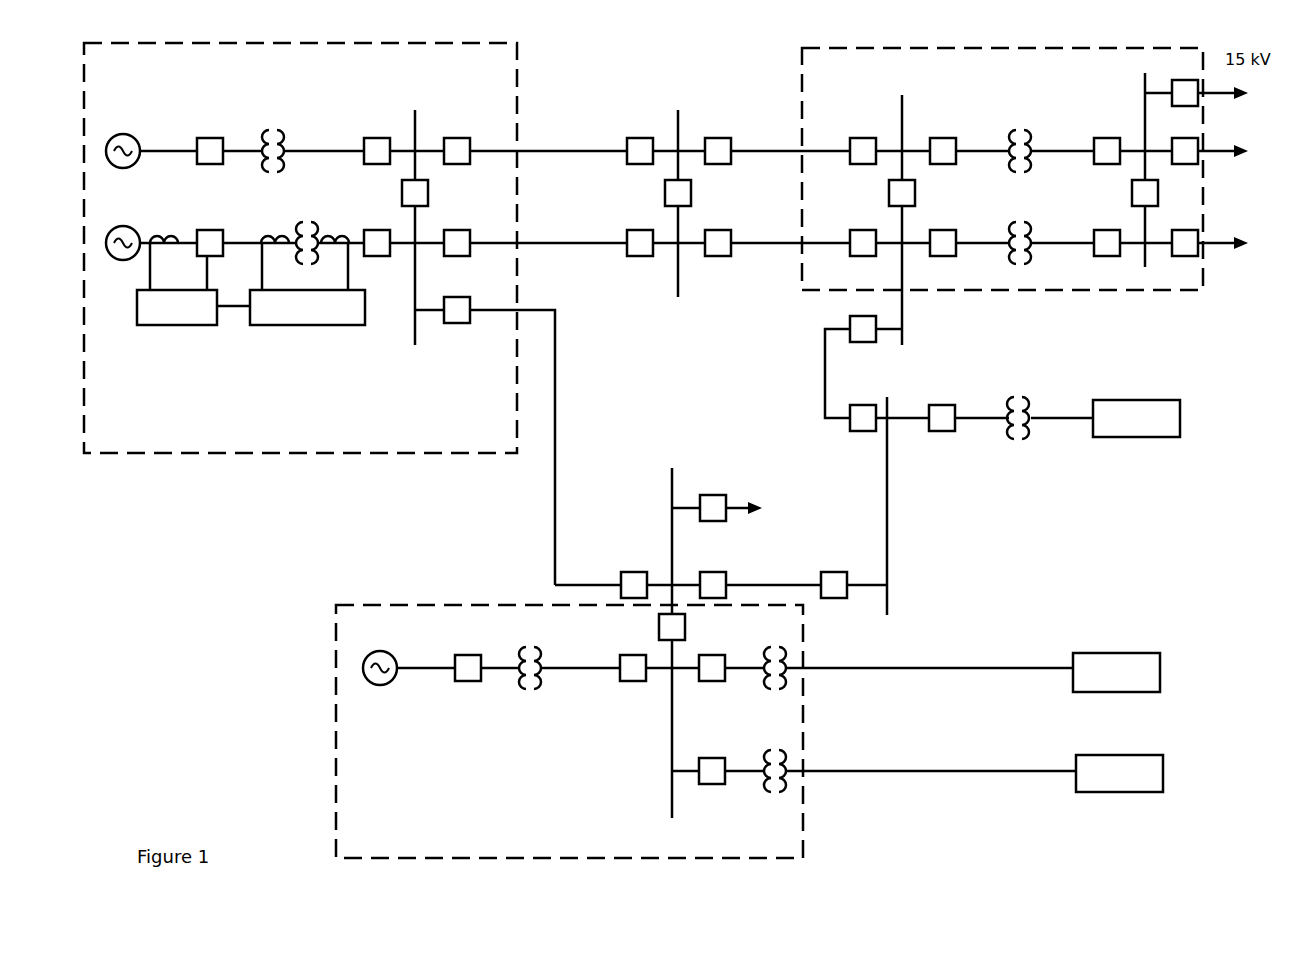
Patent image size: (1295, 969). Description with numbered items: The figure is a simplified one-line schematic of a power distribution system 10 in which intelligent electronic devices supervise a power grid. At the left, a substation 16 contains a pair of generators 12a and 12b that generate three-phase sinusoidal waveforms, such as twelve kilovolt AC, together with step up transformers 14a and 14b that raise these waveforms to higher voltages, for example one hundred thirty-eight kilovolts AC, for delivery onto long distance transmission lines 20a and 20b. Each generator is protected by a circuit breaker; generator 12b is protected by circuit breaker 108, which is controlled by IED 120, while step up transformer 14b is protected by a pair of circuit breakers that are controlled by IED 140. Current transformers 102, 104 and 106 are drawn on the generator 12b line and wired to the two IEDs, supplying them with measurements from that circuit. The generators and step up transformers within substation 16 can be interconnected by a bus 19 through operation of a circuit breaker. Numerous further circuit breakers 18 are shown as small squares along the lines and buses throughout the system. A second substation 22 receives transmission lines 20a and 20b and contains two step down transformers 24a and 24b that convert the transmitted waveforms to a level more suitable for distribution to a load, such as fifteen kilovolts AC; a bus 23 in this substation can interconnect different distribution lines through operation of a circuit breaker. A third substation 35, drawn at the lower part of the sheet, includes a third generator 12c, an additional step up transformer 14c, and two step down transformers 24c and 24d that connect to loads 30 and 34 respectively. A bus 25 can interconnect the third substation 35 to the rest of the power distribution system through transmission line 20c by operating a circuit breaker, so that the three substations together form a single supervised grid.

The power distribution system 10 is at (717, 56).
The generator 12a is at (131, 169).
The generator 12b is at (128, 262).
The third generator 12c is at (390, 688).
The step up transformer 14a is at (268, 129).
The step up transformer 14b is at (305, 225).
The additional step up transformer 14c is at (528, 648).
The substation 16 is at (517, 82).
The circuit breaker 18 is at (457, 165).
The bus 19 is at (414, 123).
The long distance transmission line 20a is at (585, 151).
The long distance transmission line 20b is at (573, 243).
The transmission line 20c is at (585, 585).
The second substation 22 is at (1070, 48).
The bus 23 is at (902, 118).
The step down transformer 24a is at (1026, 130).
The step down transformer 24b is at (1024, 220).
The step down transformer 24c is at (774, 649).
The step down transformer 24d is at (775, 793).
The bus 25 is at (672, 488).
The load 30 is at (1162, 672).
The load 34 is at (1165, 773).
The third substation 35 is at (426, 605).
The current transformer 102 is at (167, 230).
The current transformer 104 is at (261, 230).
The current transformer 106 is at (345, 230).
The circuit breaker 108 is at (208, 231).
The IED 120 is at (172, 327).
The IED 140 is at (318, 327).